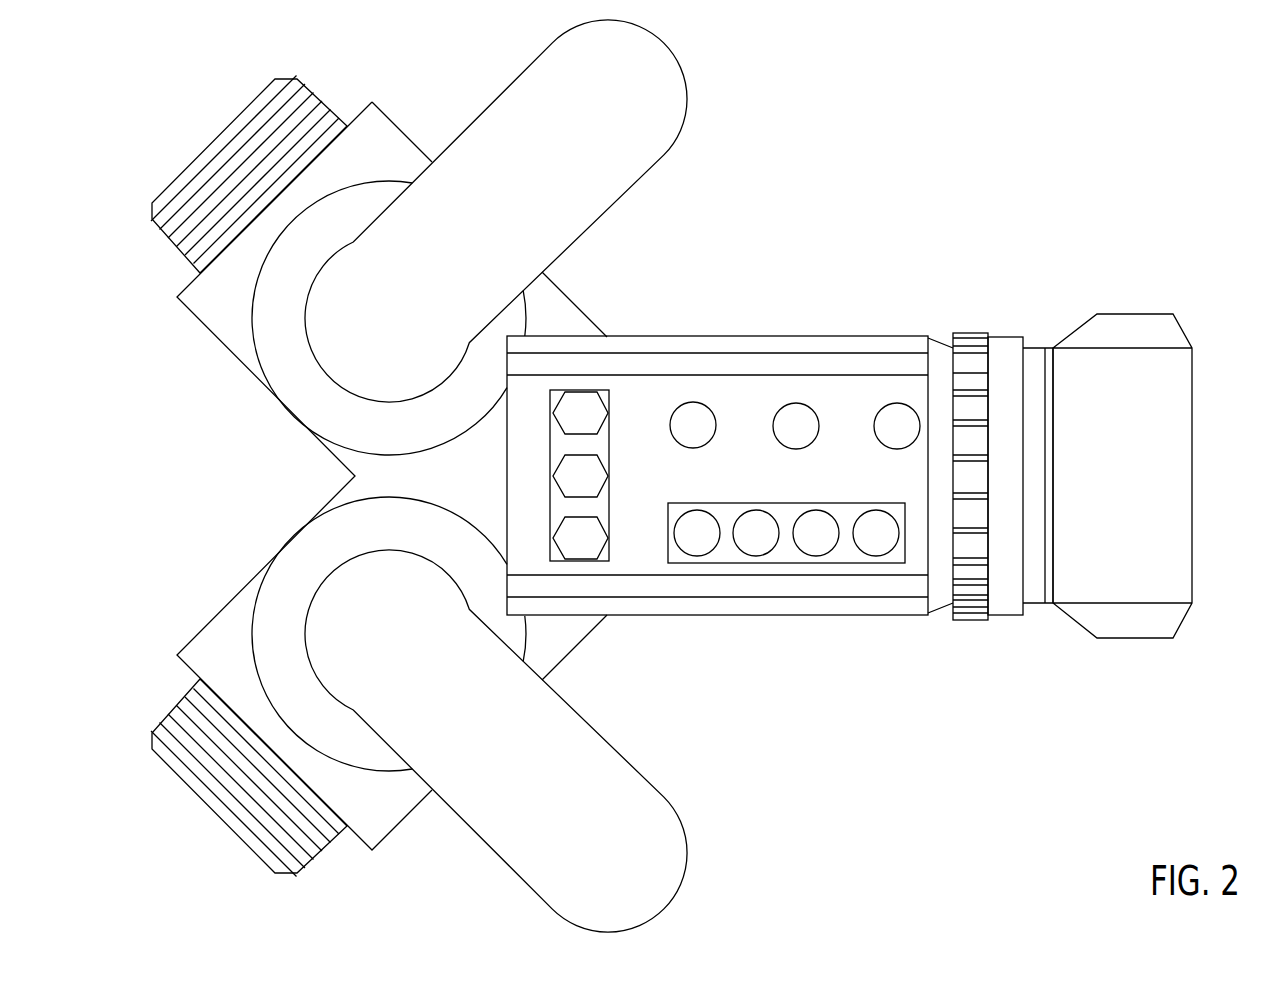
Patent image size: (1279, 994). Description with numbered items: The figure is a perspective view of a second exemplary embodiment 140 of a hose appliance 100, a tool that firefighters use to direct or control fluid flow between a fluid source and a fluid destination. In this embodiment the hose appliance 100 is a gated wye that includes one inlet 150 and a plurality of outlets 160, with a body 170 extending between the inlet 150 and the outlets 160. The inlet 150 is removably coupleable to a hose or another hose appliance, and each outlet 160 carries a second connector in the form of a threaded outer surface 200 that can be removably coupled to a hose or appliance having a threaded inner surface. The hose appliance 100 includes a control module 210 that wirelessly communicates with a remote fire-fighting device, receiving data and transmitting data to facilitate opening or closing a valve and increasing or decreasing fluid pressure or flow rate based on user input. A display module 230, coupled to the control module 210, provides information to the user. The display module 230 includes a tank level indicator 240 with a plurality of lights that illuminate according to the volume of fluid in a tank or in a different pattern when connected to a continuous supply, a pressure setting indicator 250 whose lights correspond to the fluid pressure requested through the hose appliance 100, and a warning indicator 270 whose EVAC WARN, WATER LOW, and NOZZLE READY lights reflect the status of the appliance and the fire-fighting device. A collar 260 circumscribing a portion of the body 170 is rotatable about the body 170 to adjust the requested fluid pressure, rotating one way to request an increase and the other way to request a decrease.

The hose appliance 100 is at (805, 846).
The second exemplary embodiment 140 is at (449, 878).
The inlet 150 is at (1149, 663).
The outlet 160 is at (177, 127).
The body 170 is at (690, 314).
The threaded outer surface 200 is at (170, 229).
The control module 210 is at (943, 314).
The display module 230 is at (723, 334).
The tank level indicator 240 is at (886, 569).
The pressure setting indicator 250 is at (587, 601).
The collar 260 is at (1013, 633).
The warning indicator 270 is at (821, 350).